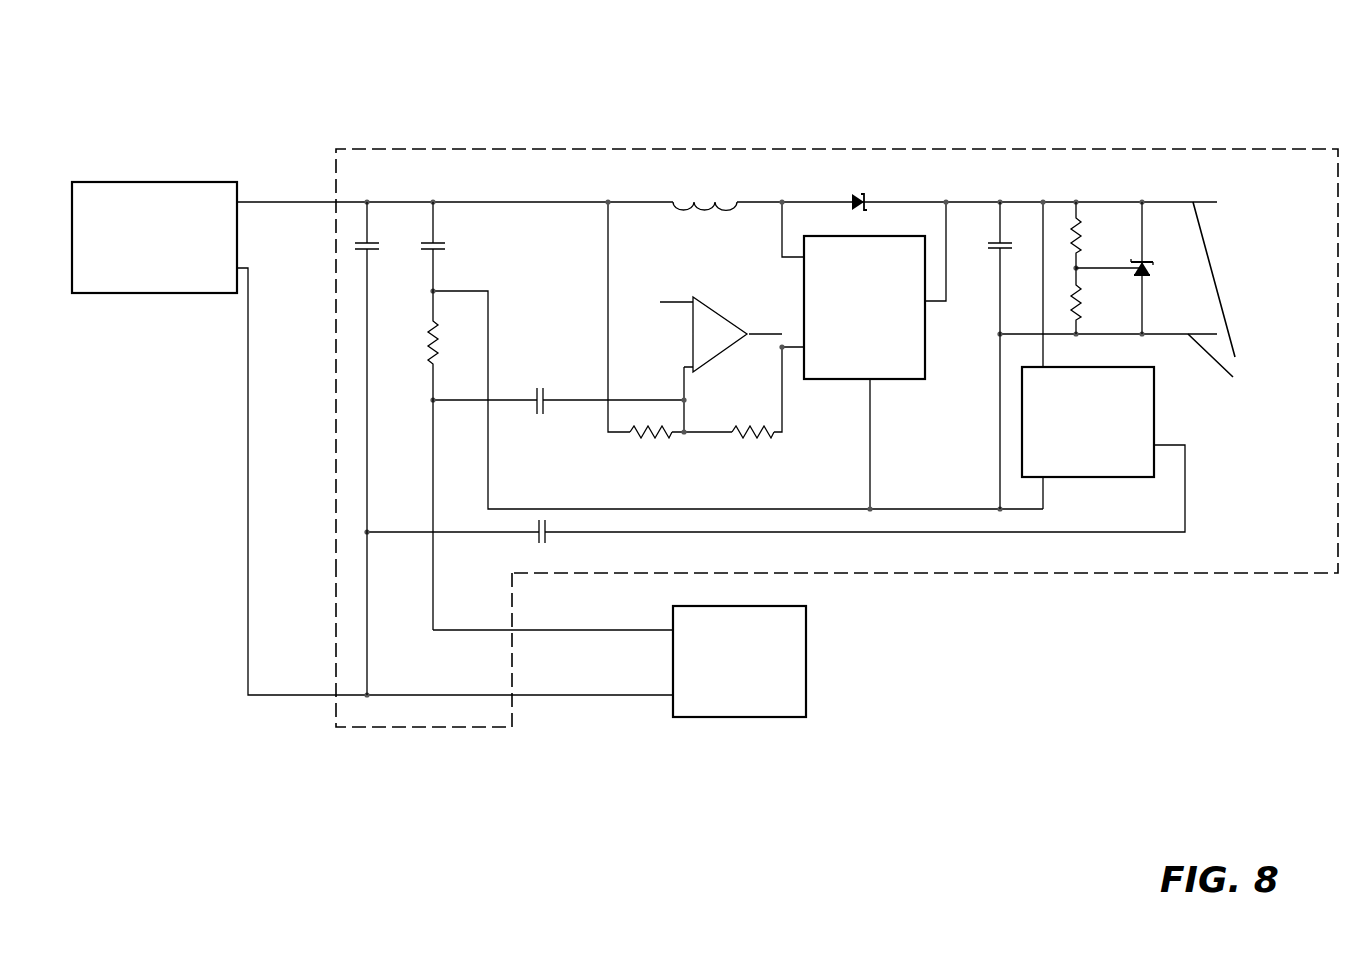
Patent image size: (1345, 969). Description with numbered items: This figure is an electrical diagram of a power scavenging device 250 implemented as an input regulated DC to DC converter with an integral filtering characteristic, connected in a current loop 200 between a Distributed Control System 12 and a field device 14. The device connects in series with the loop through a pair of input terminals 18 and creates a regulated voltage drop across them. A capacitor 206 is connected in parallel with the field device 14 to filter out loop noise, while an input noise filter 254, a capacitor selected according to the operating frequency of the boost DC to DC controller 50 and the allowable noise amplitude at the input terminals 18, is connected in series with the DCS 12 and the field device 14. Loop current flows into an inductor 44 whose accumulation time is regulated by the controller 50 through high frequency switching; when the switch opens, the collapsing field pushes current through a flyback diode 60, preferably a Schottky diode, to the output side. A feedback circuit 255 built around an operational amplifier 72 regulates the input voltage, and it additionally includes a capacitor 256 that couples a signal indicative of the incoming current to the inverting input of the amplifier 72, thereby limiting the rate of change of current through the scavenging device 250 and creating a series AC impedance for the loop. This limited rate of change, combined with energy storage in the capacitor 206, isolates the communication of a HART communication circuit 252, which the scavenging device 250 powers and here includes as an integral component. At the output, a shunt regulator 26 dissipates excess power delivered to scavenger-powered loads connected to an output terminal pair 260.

The current loop 200 is at (443, 64).
The Distributed Control System 12 is at (142, 182).
The field device 14 is at (802, 663).
The input terminals 18 is at (418, 727).
The adjustable shunt regulator 26 is at (1120, 215).
The inductor 44 is at (717, 192).
The boost DC to DC controller 50 is at (895, 380).
The flyback diode 60 is at (866, 196).
The operational amplifier 72 is at (710, 307).
The capacitor 206 is at (372, 230).
The power scavenging device 250 is at (1176, 144).
The HART communication circuit 252 is at (1148, 432).
The input noise filter 254 is at (437, 250).
The feedback circuit 255 is at (701, 270).
The capacitor 256 is at (536, 388).
The output terminal pair 260 is at (1250, 297).